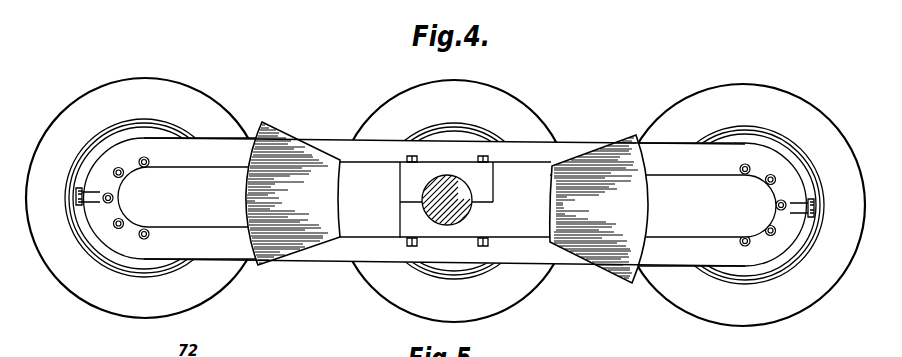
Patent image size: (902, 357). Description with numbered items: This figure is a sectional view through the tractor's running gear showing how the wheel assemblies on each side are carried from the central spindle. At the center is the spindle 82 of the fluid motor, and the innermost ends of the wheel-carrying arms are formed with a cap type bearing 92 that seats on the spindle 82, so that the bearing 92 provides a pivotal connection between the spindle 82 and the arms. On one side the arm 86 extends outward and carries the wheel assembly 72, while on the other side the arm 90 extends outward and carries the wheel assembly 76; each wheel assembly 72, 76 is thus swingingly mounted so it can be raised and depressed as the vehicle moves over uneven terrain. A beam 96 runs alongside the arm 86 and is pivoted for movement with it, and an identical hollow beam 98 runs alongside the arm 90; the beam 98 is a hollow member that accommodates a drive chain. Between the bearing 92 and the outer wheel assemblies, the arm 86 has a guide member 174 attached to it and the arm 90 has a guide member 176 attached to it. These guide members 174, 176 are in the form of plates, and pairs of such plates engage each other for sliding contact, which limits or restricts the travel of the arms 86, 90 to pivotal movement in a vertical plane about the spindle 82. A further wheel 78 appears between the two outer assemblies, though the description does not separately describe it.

The wheel assembly 72 is at (160, 76).
The middle wheel 78 is at (502, 92).
The wheel assembly 76 is at (832, 116).
The beam 96 is at (210, 144).
The arm 86 is at (190, 197).
The guide member 174 is at (295, 146).
The cap type bearing 92 is at (418, 163).
The spindle 82 is at (472, 212).
The guide member 176 is at (603, 156).
The beam 98 is at (677, 155).
The arm 90 is at (674, 228).